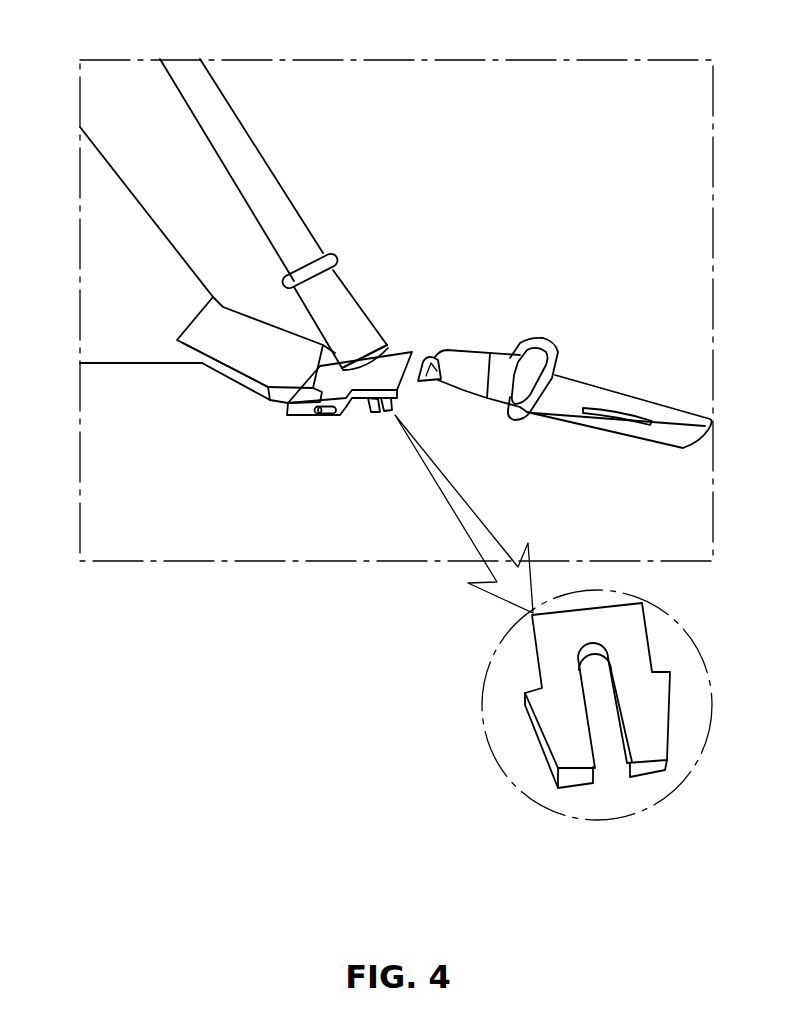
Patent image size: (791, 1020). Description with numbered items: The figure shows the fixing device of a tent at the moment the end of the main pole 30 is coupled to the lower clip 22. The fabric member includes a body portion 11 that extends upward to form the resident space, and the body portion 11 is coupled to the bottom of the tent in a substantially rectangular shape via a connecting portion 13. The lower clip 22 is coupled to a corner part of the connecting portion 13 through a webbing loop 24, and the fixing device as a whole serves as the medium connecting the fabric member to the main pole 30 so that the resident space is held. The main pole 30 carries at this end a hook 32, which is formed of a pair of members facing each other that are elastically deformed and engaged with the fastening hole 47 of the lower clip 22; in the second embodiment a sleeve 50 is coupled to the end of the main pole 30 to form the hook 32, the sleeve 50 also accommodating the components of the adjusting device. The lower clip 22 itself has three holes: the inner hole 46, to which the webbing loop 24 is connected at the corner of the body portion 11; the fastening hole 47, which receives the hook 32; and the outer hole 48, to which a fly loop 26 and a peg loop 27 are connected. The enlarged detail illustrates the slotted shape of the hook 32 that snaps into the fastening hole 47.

The body portion 11 is at (123, 348).
The connecting portion 13 is at (152, 363).
The lower clip 22 is at (337, 422).
The webbing loop 24 is at (252, 357).
The fly loop 26 is at (547, 337).
The peg loop 27 is at (628, 390).
The main pole 30 is at (254, 148).
The hook 32 is at (383, 417).
The inner hole 46 is at (313, 413).
The fastening hole 47 is at (402, 350).
The outer hole 48 is at (432, 350).
The sleeve 50 is at (347, 273).